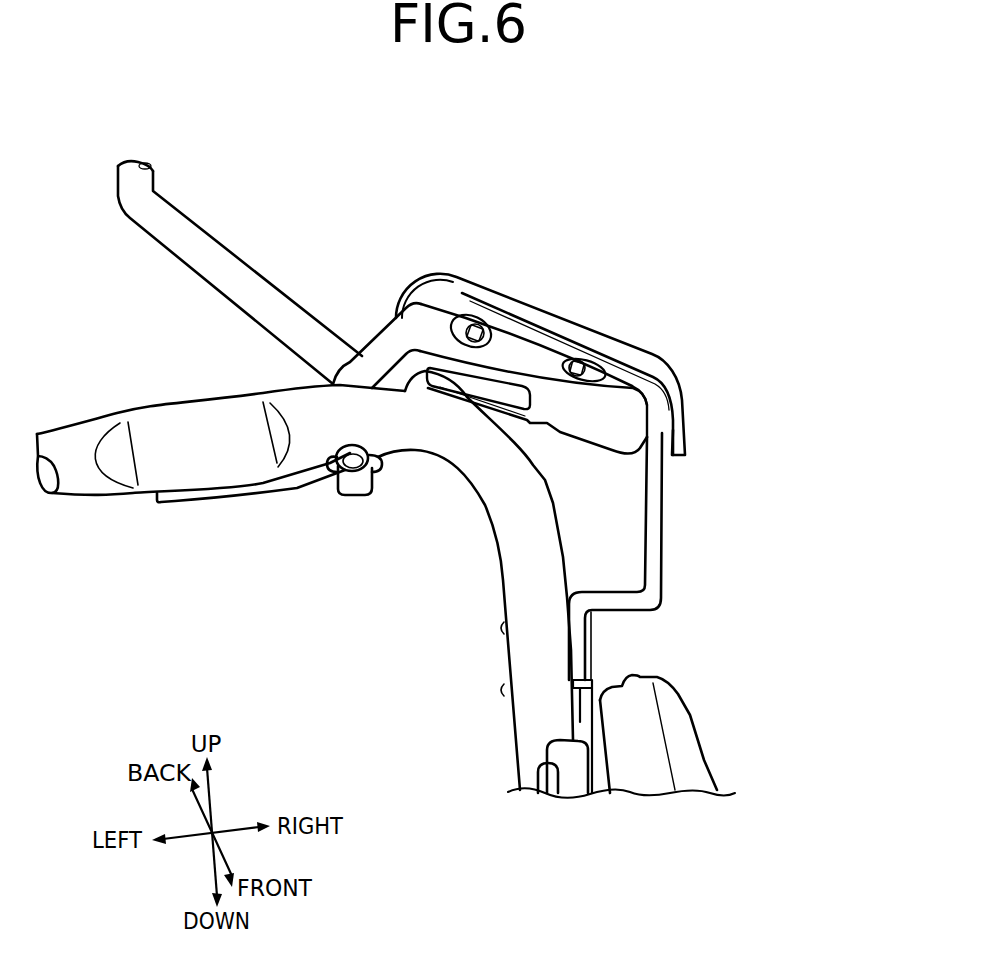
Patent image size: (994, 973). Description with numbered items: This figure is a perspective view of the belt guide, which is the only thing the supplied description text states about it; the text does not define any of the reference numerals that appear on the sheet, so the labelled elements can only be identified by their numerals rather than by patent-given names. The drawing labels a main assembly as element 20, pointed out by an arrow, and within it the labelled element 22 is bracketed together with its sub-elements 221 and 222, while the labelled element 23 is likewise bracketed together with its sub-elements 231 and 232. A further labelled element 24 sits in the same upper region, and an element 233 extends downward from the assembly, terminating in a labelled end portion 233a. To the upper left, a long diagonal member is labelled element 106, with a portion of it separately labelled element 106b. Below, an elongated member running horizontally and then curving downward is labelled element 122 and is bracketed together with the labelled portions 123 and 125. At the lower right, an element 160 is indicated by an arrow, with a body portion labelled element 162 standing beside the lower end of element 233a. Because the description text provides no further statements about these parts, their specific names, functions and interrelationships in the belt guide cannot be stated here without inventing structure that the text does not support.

The bracket assembly 20 is at (560, 399).
The upper bracket 22 is at (540, 337).
The bracket plate portion 221 is at (630, 397).
The rolled rail portion 222 is at (658, 365).
The lower bracket 23 is at (484, 317).
The mounting plate with bolts 231 is at (505, 330).
The angled flange plate 232 is at (377, 347).
The slot 24 is at (502, 383).
The strap 233 is at (653, 568).
The strap hook end 233a is at (582, 662).
The tube 106 is at (201, 196).
The tube portion 106b is at (185, 250).
The frame member 122 is at (312, 582).
The horizontal frame portion 123 is at (162, 465).
The curved leg portion 125 is at (513, 548).
The lower component 160 is at (750, 680).
The lower component body 162 is at (697, 763).